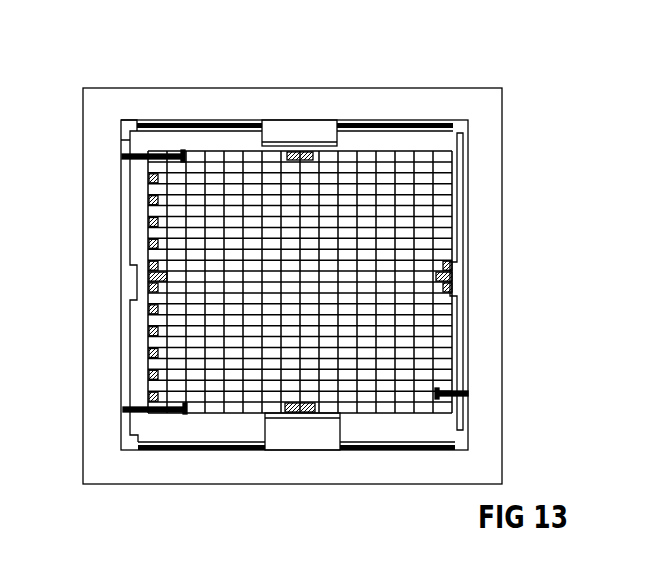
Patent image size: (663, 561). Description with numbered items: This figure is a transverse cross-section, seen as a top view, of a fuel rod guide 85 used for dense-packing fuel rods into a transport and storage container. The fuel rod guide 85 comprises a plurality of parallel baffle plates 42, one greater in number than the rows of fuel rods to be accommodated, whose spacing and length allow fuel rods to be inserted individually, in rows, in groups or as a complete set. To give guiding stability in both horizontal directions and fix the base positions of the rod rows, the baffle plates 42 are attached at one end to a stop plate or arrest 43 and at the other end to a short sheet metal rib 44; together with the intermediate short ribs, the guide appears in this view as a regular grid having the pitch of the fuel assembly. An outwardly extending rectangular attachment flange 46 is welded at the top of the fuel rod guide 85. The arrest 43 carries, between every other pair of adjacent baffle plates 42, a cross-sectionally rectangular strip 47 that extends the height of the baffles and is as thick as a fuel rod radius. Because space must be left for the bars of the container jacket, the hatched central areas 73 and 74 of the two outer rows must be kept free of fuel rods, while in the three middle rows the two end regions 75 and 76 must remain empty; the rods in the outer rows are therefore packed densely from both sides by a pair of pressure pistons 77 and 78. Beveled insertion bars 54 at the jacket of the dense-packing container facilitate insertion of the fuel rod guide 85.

The fuel rod guide 85 is at (76, 334).
The attachment flange 46 is at (203, 120).
The insertion bars 54 is at (292, 130).
The baffle plates 42 is at (420, 151).
The sheet metal rib 44 is at (455, 322).
The arrest 43 is at (124, 165).
The rectangular strip 47 is at (150, 222).
The central area 73 is at (305, 152).
The central area 74 is at (312, 412).
The end region 75 is at (152, 290).
The end region 76 is at (453, 273).
The pressure piston 77 is at (142, 409).
The pressure piston 78 is at (138, 152).